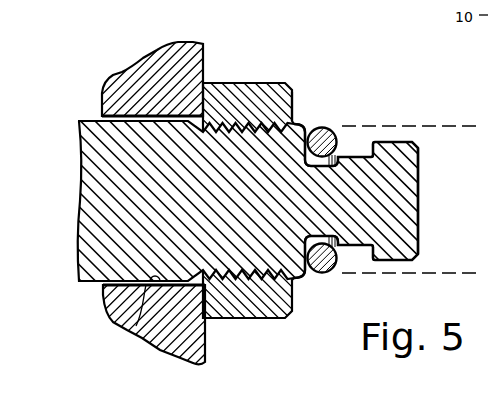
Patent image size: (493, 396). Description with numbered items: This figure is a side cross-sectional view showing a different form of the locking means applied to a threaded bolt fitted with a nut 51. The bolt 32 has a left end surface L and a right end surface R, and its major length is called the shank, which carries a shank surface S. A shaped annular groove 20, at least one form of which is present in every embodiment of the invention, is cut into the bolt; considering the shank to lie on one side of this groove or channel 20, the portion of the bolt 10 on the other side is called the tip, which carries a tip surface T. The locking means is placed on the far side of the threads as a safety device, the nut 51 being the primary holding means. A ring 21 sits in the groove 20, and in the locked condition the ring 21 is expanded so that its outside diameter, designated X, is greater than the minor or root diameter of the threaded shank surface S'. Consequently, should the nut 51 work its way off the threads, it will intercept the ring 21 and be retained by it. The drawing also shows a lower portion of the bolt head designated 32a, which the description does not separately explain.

The bolt 10 is at (93, 272).
The shaped annular groove 20 is at (353, 150).
The ring 21 is at (322, 127).
The nut 51 is at (228, 90).
The bolt 32 is at (150, 55).
The lower clamp jaw 32a is at (132, 333).
The shank surface S is at (125, 90).
The threaded shank surface S' is at (307, 89).
The tip surface T is at (390, 142).
The right end surface R is at (418, 205).
The outside diameter of the ring X is at (468, 130).
The left end surface L is at (490, 74).